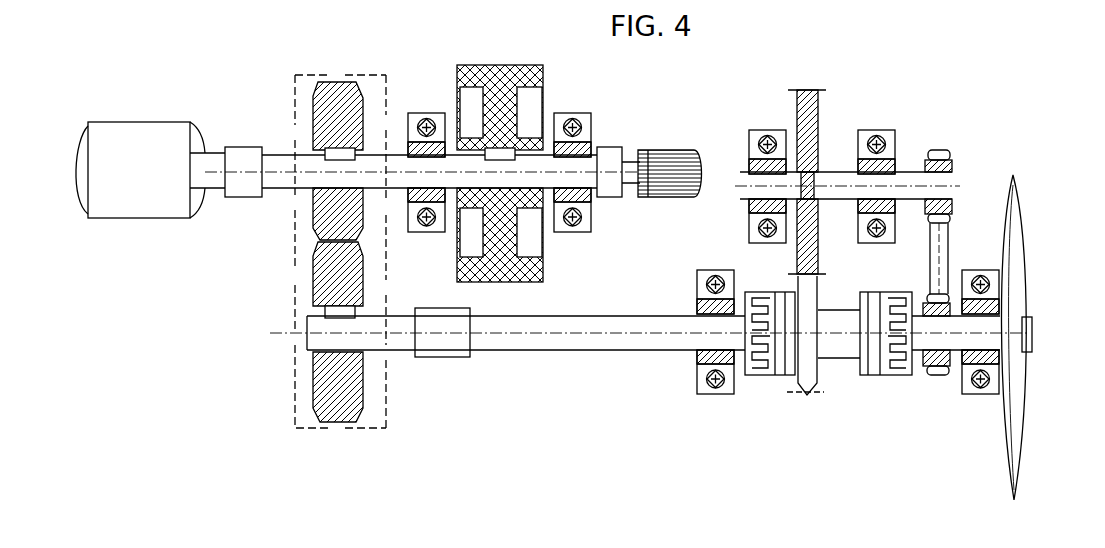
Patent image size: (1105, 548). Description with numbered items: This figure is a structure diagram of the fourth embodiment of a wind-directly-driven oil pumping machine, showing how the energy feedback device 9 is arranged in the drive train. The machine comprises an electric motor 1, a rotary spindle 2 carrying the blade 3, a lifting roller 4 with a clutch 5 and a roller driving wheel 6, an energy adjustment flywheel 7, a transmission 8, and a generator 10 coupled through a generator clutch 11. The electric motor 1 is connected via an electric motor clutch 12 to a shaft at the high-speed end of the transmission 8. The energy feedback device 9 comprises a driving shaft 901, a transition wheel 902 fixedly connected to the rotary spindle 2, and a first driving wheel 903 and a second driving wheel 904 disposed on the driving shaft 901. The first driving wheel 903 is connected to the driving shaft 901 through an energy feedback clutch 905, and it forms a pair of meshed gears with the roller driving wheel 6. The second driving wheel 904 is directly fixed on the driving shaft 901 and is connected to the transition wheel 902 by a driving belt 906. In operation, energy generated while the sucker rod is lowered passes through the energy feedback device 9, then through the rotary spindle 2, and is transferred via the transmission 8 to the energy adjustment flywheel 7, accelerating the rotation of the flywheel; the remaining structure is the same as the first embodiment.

The electric motor 1 is at (668, 149).
The rotary spindle 2 is at (485, 348).
The blade 3 is at (1027, 233).
The lifting roller 4 is at (847, 356).
The clutch 5 is at (760, 370).
The roller driving wheel 6 is at (807, 386).
The energy adjustment flywheel 7 is at (490, 64).
The transmission 8 is at (305, 97).
The energy feedback device 9 is at (899, 110).
The generator 10 is at (133, 140).
The generator clutch 11 is at (246, 149).
The electric motor clutch 12 is at (604, 149).
The driving shaft 901 is at (833, 171).
The transition wheel 902 is at (938, 368).
The first driving wheel 903 is at (803, 124).
The second driving wheel 904 is at (940, 155).
The energy feedback clutch 905 is at (823, 205).
The driving belt 906 is at (945, 255).